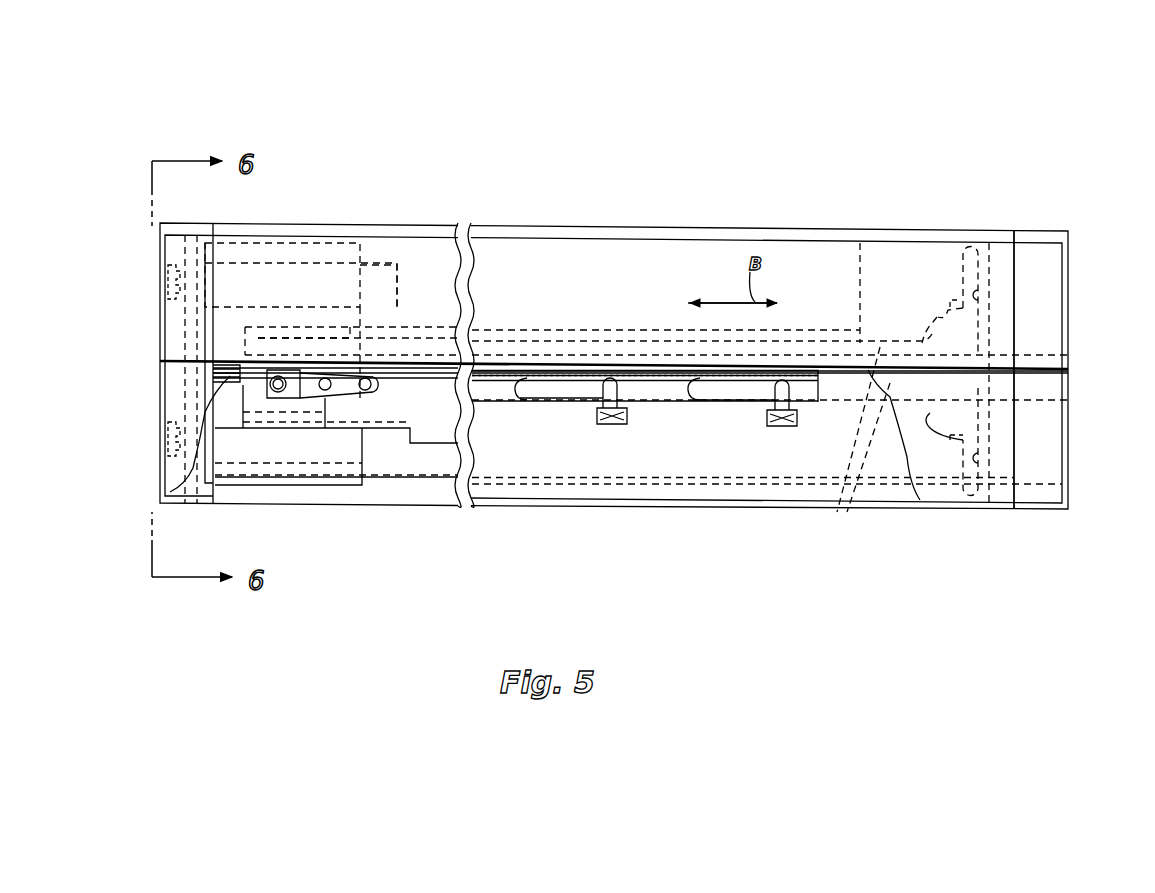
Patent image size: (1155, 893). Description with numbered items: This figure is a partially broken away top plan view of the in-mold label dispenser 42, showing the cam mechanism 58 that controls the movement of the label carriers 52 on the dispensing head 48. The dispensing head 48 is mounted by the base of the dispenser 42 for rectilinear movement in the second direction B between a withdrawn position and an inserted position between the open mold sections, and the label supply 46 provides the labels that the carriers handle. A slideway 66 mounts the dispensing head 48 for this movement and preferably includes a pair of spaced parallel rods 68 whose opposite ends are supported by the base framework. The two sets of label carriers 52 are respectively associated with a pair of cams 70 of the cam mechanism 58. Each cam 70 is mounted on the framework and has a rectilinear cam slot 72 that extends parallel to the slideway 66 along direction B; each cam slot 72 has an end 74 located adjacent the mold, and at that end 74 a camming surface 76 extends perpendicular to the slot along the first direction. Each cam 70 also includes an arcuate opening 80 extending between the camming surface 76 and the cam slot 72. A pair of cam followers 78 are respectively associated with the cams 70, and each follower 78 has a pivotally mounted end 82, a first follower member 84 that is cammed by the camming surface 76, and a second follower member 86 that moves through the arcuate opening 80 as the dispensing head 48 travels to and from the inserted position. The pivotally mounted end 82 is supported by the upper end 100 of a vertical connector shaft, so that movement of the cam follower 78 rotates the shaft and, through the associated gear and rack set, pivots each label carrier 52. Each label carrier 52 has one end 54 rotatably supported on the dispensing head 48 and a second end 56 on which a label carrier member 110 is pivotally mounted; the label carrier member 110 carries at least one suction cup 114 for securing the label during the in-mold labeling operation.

The in-mold label dispenser 42 is at (842, 143).
The label supply 46 is at (718, 460).
The dispensing head 48 is at (660, 410).
The label carrier 52 is at (562, 392).
The label carrier end 54 is at (522, 378).
The second label carrier end 56 is at (597, 380).
The cam mechanism 58 is at (252, 386).
The slideway 66 is at (288, 252).
The parallel rods 68 is at (370, 345).
The cam 70 is at (1050, 332).
The cam slot 72 is at (890, 455).
The cam slot end 74 is at (962, 360).
The camming surface 76 is at (978, 297).
The cam follower 78 is at (328, 350).
The arcuate opening 80 is at (940, 315).
The pivotally mounted end 82 is at (277, 330).
The first follower member 84 is at (375, 347).
The second follower member 86 is at (360, 290).
The upper end of connector shaft 100 is at (262, 394).
The label carrier member 110 is at (606, 388).
The suction cup 114 is at (614, 424).